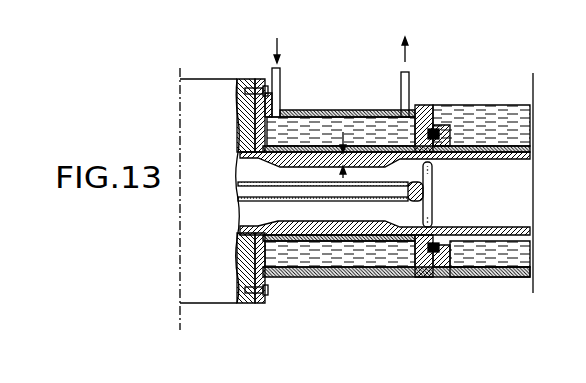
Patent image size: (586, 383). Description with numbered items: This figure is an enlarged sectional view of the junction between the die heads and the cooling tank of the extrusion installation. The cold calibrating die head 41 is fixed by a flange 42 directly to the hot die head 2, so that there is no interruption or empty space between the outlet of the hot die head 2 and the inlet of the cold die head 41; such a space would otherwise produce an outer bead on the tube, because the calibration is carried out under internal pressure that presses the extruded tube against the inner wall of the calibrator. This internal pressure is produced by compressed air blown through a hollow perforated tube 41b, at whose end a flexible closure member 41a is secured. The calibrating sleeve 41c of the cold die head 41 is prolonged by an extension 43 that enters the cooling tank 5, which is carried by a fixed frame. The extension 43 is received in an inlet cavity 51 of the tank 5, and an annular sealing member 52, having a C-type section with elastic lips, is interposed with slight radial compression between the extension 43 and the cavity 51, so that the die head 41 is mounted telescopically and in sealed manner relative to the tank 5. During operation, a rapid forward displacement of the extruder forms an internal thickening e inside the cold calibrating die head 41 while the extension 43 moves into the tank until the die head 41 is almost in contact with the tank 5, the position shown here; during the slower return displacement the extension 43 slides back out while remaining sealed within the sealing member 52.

The hot die head 2 is at (210, 290).
The flange 42 is at (258, 303).
The cold calibrating die head 41 is at (314, 277).
The flexible closure member 41a is at (432, 186).
The hollow perforated tube 41b is at (260, 183).
The calibrating sleeve 41c is at (307, 150).
The extension 43 is at (472, 147).
The inlet cavity 51 is at (452, 268).
The annular sealing member 52 is at (432, 262).
The cooling tank 5 is at (498, 277).
The internal thickening e is at (352, 150).